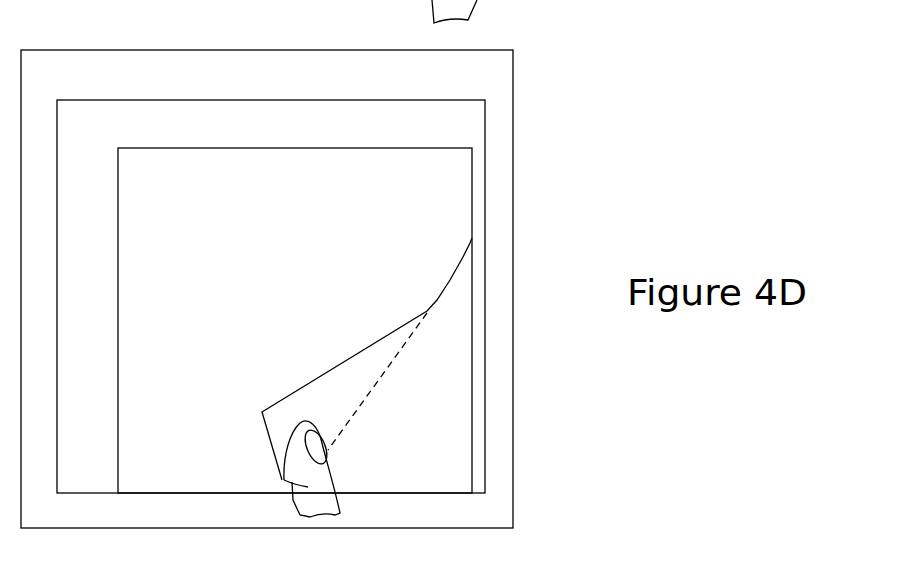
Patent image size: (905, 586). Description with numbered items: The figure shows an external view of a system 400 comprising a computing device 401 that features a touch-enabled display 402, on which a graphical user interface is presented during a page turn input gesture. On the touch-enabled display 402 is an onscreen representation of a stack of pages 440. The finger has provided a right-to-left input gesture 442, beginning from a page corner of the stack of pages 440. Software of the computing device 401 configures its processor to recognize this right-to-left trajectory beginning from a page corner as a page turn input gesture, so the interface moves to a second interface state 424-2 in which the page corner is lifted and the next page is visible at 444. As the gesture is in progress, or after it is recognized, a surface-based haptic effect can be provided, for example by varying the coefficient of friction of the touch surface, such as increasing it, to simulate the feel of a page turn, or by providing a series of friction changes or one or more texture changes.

The system 400 is at (145, 18).
The computing device 401 is at (388, 78).
The touch-enabled display 402 is at (418, 126).
The onscreen representation of a stack of pages 440 is at (472, 160).
The second interface state 424-2 is at (289, 394).
The next page 444 is at (447, 385).
The right-to-left input gesture 442 is at (283, 482).